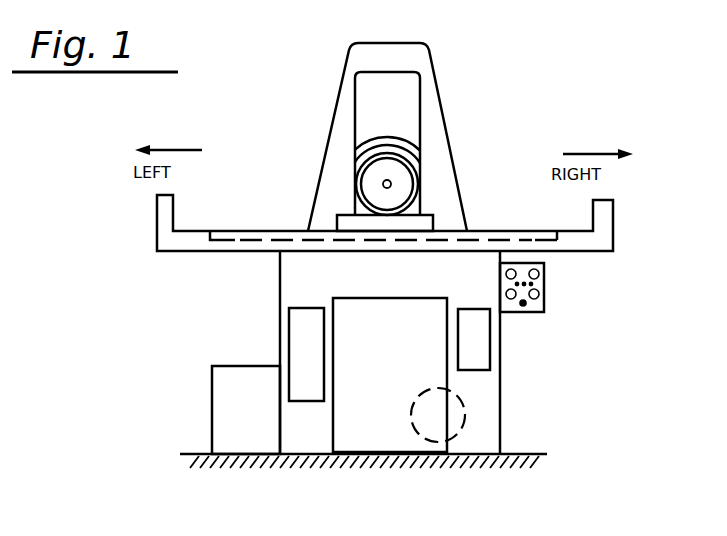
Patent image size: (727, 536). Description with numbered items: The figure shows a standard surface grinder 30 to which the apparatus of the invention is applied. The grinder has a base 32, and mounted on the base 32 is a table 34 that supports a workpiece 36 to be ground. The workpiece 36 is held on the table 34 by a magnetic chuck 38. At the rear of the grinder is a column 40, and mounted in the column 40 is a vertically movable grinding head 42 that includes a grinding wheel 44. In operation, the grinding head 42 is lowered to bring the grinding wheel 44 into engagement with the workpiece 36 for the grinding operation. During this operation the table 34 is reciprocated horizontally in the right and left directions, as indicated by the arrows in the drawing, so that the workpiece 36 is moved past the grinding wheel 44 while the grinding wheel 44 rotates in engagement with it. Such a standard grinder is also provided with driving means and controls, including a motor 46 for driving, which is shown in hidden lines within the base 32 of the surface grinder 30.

The surface grinder 30 is at (484, 84).
The base 32 is at (502, 404).
The table 34 is at (148, 232).
The workpiece 36 is at (432, 212).
The magnetic chuck 38 is at (233, 253).
The column 40 is at (345, 73).
The grinding head 42 is at (370, 148).
The grinding wheel 44 is at (367, 183).
The motor 46 is at (415, 413).